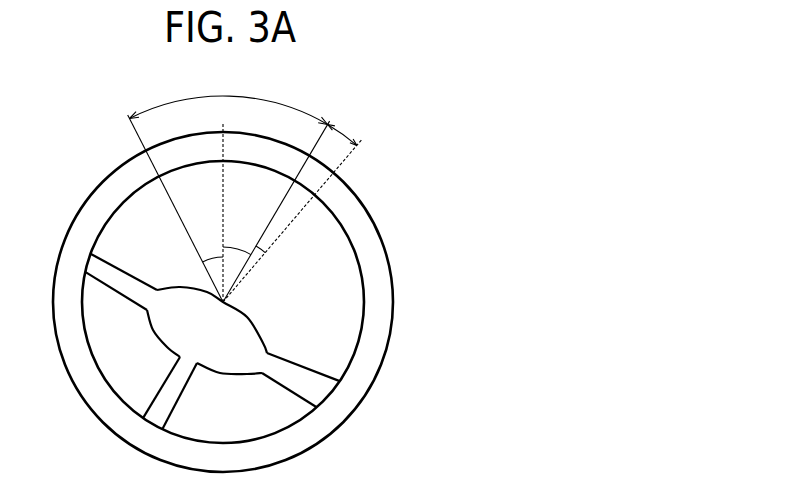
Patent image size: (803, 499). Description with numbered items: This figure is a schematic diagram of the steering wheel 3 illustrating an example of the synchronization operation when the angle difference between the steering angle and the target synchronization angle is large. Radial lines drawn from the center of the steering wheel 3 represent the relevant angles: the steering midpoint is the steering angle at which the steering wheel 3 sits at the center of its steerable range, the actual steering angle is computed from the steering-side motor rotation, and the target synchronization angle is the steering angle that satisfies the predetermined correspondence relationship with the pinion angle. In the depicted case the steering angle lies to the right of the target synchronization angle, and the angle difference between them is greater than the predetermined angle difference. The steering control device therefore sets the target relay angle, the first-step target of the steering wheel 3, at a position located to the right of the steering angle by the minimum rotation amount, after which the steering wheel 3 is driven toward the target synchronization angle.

The steering wheel 3 is at (393, 298).